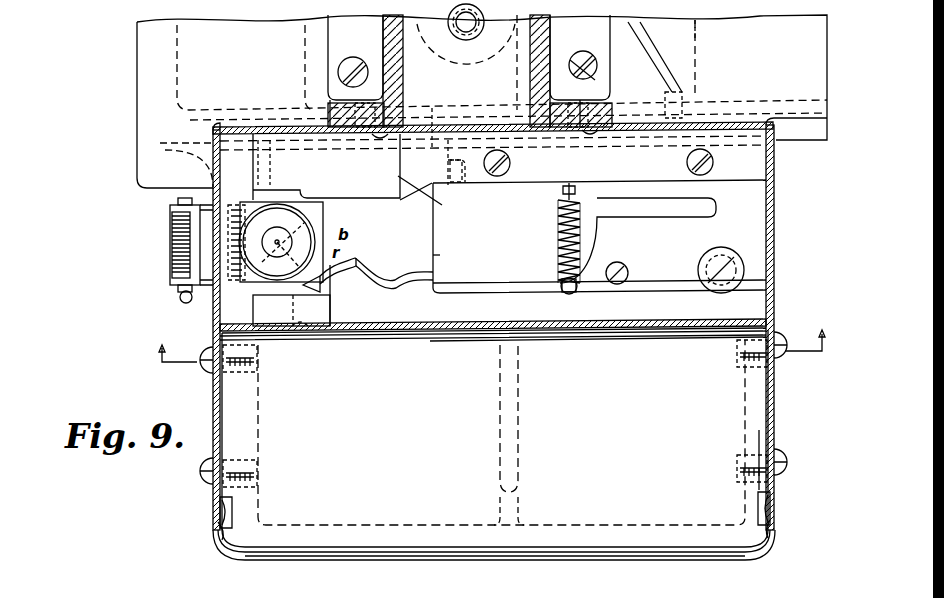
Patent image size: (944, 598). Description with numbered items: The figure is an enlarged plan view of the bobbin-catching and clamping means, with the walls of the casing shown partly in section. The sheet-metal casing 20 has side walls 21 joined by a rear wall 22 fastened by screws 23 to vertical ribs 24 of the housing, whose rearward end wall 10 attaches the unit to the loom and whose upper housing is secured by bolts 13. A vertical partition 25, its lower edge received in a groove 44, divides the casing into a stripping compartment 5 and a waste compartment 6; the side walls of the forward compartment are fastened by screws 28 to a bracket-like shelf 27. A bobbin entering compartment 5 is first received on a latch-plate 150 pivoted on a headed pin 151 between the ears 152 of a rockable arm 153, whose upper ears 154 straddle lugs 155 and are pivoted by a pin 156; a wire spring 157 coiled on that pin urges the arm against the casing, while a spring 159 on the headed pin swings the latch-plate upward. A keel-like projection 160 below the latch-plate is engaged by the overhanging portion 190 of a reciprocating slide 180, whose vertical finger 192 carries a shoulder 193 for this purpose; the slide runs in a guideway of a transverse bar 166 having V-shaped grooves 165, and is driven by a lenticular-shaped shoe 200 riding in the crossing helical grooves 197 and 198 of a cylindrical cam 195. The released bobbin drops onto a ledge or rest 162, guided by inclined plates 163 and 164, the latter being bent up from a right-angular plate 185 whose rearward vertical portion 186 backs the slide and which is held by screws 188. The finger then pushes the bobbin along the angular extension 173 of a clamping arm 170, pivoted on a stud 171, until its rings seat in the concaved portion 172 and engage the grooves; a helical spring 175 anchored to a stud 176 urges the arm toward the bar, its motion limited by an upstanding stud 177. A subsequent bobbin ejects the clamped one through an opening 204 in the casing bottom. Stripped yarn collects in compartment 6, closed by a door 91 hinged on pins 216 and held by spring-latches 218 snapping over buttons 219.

The stripping compartment 5 is at (454, 326).
The compartment 6 is at (472, 517).
The rearward end wall 10 is at (173, 72).
The bolts 13 is at (356, 58).
The casing 20 is at (498, 339).
The side walls 21 is at (213, 333).
The rear wall 22 is at (482, 127).
The screws 23 is at (378, 136).
The vertical ribs 24 is at (326, 110).
The vertical partition 25 is at (622, 333).
The bracket-like shelf 27 is at (390, 512).
The screws 28 is at (210, 460).
The groove 44 is at (372, 333).
The door 91 is at (320, 560).
The latch-plate 150 is at (359, 252).
The headed pin 151 is at (238, 282).
The ears 152 is at (213, 305).
The rockable arm 153 is at (159, 245).
The ears 154 is at (172, 282).
The lugs 155 is at (178, 204).
The pin 156 is at (181, 298).
The wire spring 157 is at (172, 234).
The spring 159 is at (281, 242).
The keel-like projection 160 is at (291, 310).
The ledge or rest 162 is at (420, 333).
The inclined plate 163 is at (331, 312).
The inclined guide-plate 164 is at (433, 200).
The horizontal grooves 165 is at (433, 224).
The transverse bar 166 is at (305, 140).
The clamping arm 170 is at (468, 284).
The stud 171 is at (699, 272).
The concaved portion 172 is at (388, 266).
The angular extension 173 is at (320, 285).
The helical spring 175 is at (558, 240).
The stud 176 is at (563, 190).
The upstanding stud 177 is at (619, 262).
The reciprocating slide 180 is at (326, 167).
The plate 185 is at (522, 185).
The rearward vertical portion 186 is at (165, 153).
The screws 188 is at (510, 163).
The overhanging portion 190 is at (474, 180).
The vertical finger 192 is at (335, 212).
The shoulder 193 is at (289, 260).
The cylindrical cam 195 is at (695, 33).
The helical groove 197 is at (672, 75).
The helical groove 198 is at (583, 80).
The lenticular-shaped shoe 200 is at (678, 94).
The opening 204 is at (433, 262).
The pins 216 is at (218, 520).
The spring-latches 218 is at (228, 515).
The buttons 219 is at (222, 508).